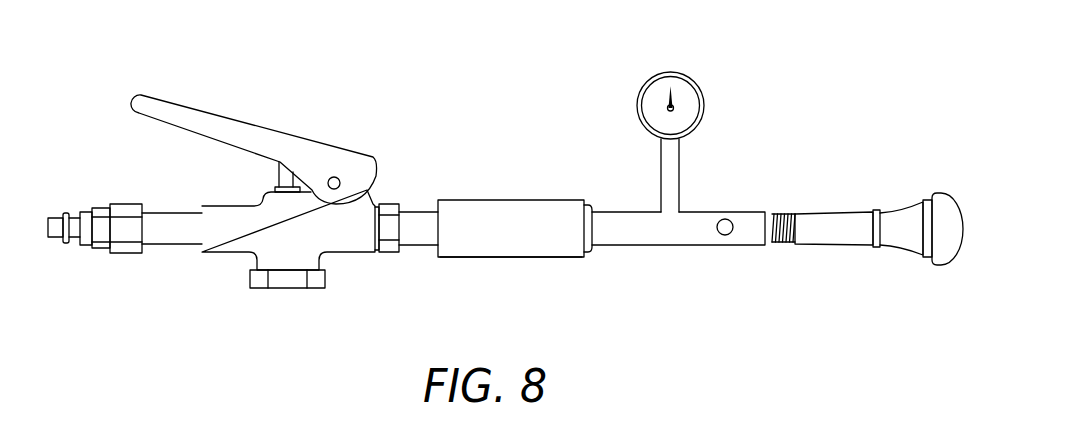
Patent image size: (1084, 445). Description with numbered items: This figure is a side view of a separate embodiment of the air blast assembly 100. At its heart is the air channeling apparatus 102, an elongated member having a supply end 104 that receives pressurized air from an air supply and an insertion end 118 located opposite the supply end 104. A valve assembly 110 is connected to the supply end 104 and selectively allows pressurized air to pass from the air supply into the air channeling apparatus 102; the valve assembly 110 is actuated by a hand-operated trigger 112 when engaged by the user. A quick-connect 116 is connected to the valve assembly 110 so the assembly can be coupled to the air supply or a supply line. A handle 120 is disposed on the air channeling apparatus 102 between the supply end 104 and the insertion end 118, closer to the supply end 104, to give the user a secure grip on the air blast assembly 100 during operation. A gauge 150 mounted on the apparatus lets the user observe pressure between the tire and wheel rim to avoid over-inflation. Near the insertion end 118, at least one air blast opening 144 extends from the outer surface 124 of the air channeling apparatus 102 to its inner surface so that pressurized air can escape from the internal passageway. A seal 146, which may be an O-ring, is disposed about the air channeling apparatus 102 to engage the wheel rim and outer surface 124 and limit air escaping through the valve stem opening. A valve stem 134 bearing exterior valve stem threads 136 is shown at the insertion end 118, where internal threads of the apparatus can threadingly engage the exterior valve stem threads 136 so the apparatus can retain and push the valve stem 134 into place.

The air blast assembly 100 is at (816, 63).
The air channeling apparatus 102 is at (565, 189).
The supply end 104 is at (383, 265).
The valve assembly 110 is at (239, 281).
The trigger 112 is at (230, 113).
The quick-connect 116 is at (73, 194).
The insertion end 118 is at (731, 256).
The handle 120 is at (465, 200).
The outer surface 124 is at (492, 257).
The valve stem 134 is at (835, 212).
The exterior valve stem threads 136 is at (780, 213).
The air blast opening 144 is at (722, 219).
The seal 146 is at (588, 253).
The gauge 150 is at (669, 72).